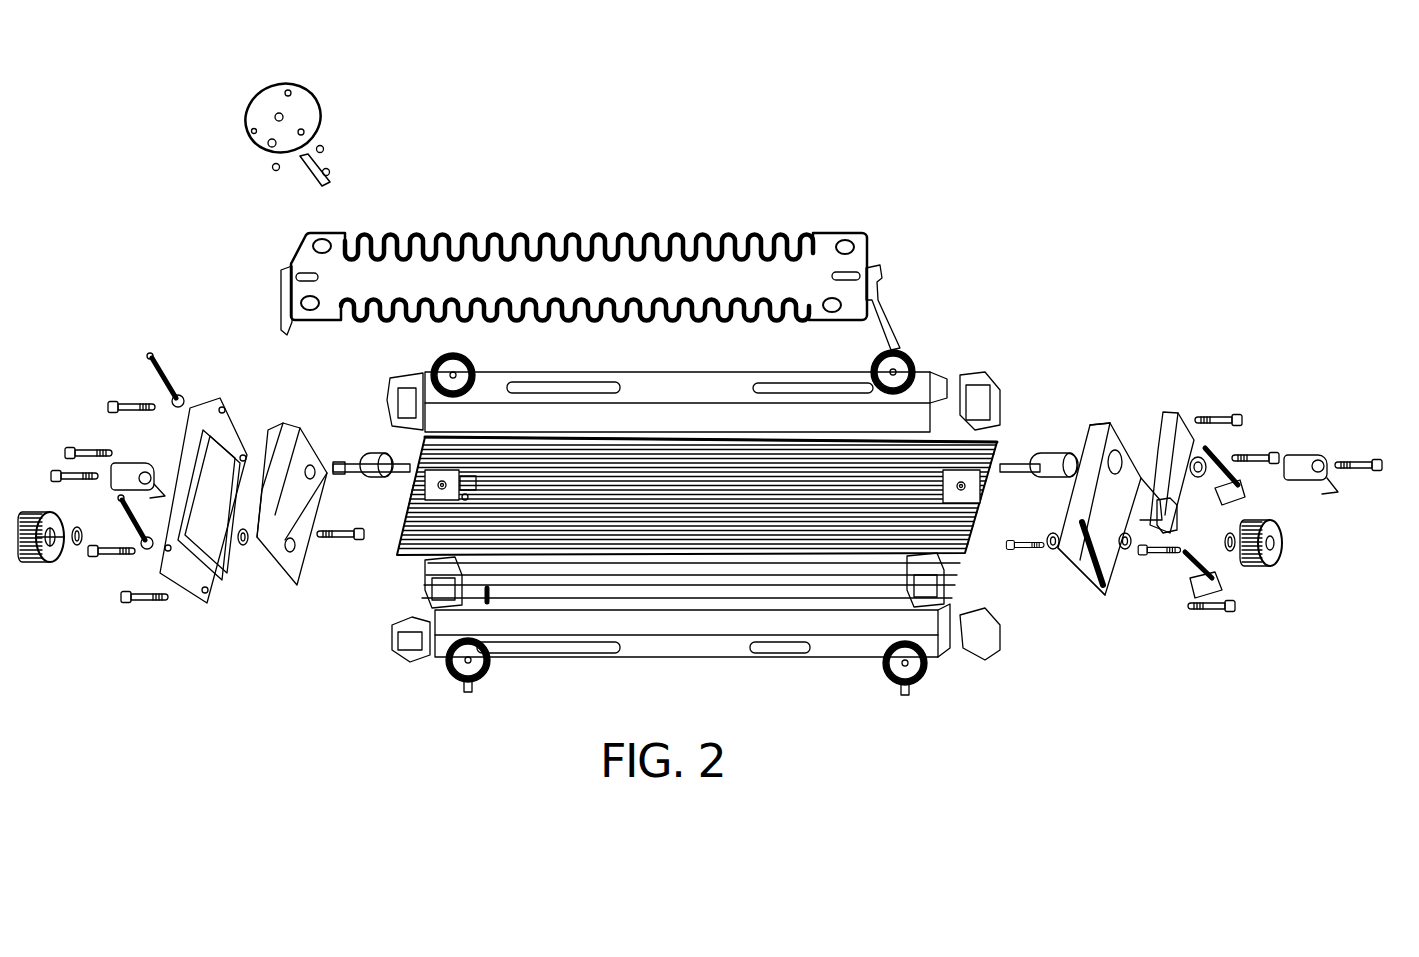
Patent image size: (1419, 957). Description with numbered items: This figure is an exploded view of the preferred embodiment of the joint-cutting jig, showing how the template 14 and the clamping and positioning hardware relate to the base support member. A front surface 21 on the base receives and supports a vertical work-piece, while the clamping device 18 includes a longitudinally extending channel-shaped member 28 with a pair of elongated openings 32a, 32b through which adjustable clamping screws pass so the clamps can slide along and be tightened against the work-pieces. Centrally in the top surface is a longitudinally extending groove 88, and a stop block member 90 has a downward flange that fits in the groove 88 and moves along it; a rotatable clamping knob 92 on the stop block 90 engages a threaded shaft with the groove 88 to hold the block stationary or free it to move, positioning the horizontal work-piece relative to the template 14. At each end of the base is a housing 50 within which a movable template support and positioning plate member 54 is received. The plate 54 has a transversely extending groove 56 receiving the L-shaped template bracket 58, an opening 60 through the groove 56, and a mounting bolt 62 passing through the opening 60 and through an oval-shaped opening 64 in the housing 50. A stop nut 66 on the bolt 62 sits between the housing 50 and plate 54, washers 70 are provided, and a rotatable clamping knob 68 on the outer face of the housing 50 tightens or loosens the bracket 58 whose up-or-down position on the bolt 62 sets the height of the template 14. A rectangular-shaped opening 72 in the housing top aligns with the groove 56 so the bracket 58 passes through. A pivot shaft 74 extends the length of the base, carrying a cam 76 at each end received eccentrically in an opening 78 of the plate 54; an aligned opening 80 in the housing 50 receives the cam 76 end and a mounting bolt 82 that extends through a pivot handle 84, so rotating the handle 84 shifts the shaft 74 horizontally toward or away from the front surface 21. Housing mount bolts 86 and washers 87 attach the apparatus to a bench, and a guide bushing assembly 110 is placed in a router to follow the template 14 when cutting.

The guide bushing assembly 110 is at (250, 88).
The template 14 is at (555, 240).
The template bracket 58 is at (880, 300).
The pivot handle 84 is at (130, 460).
The clamping knob 68 is at (17, 560).
The cam 76 is at (375, 455).
The pivot shaft 74 is at (385, 478).
The clamping knob 92 is at (383, 423).
The front surface 21 is at (392, 570).
The clamping device 18 is at (718, 663).
The channel-shaped member 28 is at (660, 663).
The elongated opening 32b is at (560, 665).
The elongated opening 32a is at (806, 663).
The stop block member 90 is at (467, 495).
The groove 88 is at (468, 480).
The template support and positioning plate member 54 is at (1097, 430).
The opening 78 is at (1100, 425).
The groove 56 is at (1092, 597).
The opening 60 is at (1090, 590).
The mounting bolt 62 is at (1030, 550).
The stop nut 66 is at (1123, 550).
The oval-shaped opening 64 is at (1133, 550).
The rectangular-shaped opening 72 is at (1140, 520).
The housing 50 is at (1188, 423).
The opening 80 is at (1223, 463).
The mounting bolt 82 is at (1347, 470).
The housing mount bolt 86 is at (1137, 553).
The washer 87 is at (1217, 587).
The washer 70 is at (1230, 550).